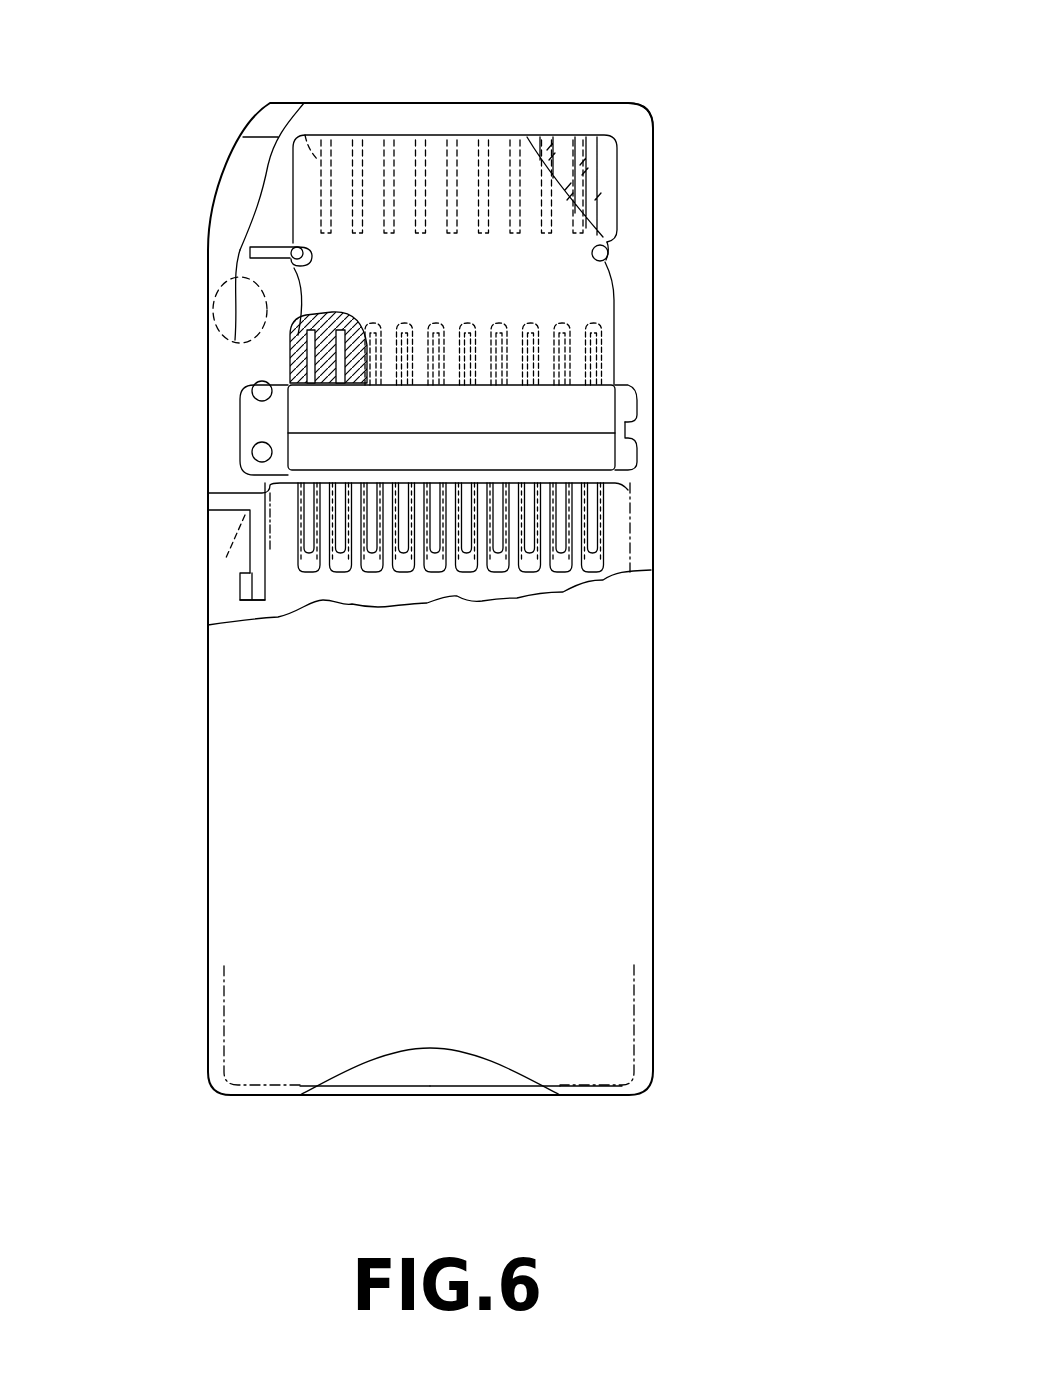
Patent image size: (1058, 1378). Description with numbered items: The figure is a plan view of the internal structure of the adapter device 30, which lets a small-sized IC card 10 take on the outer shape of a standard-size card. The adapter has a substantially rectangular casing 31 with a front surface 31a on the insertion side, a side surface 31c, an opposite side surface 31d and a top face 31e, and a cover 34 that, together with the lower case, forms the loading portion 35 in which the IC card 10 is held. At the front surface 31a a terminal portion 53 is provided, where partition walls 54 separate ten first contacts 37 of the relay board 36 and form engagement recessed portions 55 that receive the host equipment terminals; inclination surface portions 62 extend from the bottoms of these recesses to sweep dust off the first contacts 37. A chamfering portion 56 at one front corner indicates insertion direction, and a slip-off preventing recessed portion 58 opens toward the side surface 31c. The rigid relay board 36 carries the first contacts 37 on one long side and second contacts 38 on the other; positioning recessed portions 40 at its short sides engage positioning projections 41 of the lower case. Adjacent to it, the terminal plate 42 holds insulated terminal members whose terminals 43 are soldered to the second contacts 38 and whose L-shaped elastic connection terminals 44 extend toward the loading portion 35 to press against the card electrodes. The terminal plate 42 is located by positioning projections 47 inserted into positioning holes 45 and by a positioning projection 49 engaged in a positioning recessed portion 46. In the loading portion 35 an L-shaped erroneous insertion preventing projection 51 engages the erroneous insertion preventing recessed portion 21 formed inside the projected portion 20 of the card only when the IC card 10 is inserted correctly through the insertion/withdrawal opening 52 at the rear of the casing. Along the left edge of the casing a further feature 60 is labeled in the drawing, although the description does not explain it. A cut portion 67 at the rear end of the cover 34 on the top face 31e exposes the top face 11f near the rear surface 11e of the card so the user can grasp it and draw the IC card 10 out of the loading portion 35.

The adapter device 30 is at (676, 80).
The casing 31 is at (633, 730).
The front surface 31a is at (465, 100).
The side surface 31c is at (208, 690).
The side surface 31d is at (651, 645).
The top face 31e is at (627, 810).
The terminal portion 53 is at (543, 88).
The partition walls 54 is at (388, 140).
The first contacts 37 is at (345, 150).
The engagement recessed portions 55 is at (305, 135).
The chamfering portion 56 is at (236, 148).
The slip-off preventing recessed portion 58 is at (212, 313).
The positioning projections 41 is at (246, 243).
The positioning recessed portions 40 is at (316, 258).
The relay board 36 is at (585, 300).
The second contacts 38 is at (610, 325).
The terminal 43 is at (610, 362).
The terminal plate 42 is at (448, 405).
The positioning holes 45 is at (258, 393).
The positioning projections 47 is at (258, 453).
The positioning projection 49 is at (637, 410).
The positioning recessed portion 46 is at (637, 428).
The connection terminal 44 is at (593, 500).
The erroneous insertion preventing projection 51 is at (240, 512).
The loading portion 35 is at (230, 538).
The erroneous insertion preventing recessed portion 21 is at (225, 583).
The projected portion 20 is at (270, 553).
The inclination surface portions 62 is at (212, 885).
The cover 34 is at (640, 935).
The guide groove 60 is at (208, 1012).
The cut portion 67 is at (433, 1054).
The insertion/withdrawal opening 52 is at (270, 1095).
The top face 11f is at (372, 1080).
The rear surface 11e is at (475, 1093).
The IC card 10 is at (630, 1098).